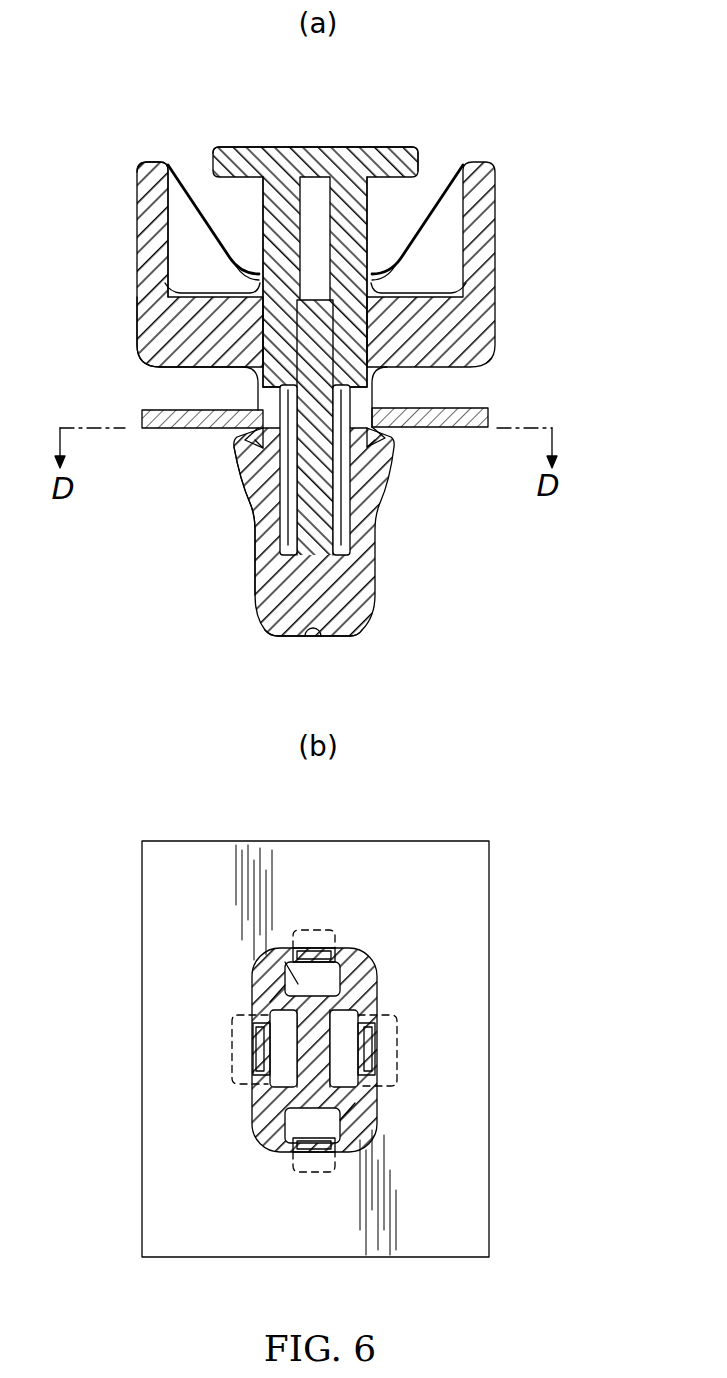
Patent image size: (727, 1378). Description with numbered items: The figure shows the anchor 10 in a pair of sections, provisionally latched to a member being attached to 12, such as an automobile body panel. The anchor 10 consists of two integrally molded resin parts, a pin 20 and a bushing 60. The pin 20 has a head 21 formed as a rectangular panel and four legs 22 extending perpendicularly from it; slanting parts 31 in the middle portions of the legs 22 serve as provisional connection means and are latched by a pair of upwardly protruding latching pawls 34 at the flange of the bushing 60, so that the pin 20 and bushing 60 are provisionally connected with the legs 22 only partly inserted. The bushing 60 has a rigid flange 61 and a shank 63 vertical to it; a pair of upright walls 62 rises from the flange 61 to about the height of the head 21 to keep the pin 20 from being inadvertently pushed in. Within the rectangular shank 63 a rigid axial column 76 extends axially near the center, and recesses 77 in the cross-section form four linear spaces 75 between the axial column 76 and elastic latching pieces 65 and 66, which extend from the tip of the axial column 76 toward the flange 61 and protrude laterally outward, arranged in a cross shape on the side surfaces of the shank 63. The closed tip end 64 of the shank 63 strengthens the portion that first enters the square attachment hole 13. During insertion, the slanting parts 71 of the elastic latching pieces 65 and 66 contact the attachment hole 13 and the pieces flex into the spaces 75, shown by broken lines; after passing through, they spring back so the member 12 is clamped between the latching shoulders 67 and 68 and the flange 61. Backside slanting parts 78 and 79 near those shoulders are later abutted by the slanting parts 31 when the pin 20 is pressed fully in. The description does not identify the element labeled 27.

The anchor 10 is at (516, 184).
The member being attached to 12 is at (142, 414).
The attachment hole 13 is at (380, 400).
The pin 20 is at (352, 148).
The head 21 is at (275, 152).
The legs 22 is at (360, 222).
The engaging projection 27 is at (247, 373).
The slanting parts 31 is at (162, 289).
The latching pawls 34 is at (470, 283).
The bushing 60 is at (497, 284).
The flange 61 is at (150, 332).
The upright walls 62 is at (155, 192).
The shank 63 is at (262, 560).
The tip end 64 is at (355, 600).
The elastic latching piece 65 is at (247, 470).
The elastic latching piece 66 is at (340, 952).
The latching shoulder 67 is at (315, 930).
The latching shoulder 68 is at (235, 1062).
The slanting part 71 is at (258, 505).
The spaces 75 is at (288, 541).
The axial column 76 is at (340, 488).
The recesses 77 is at (357, 1000).
The backside slanting part 78 is at (260, 448).
The backside slanting part 79 is at (385, 430).